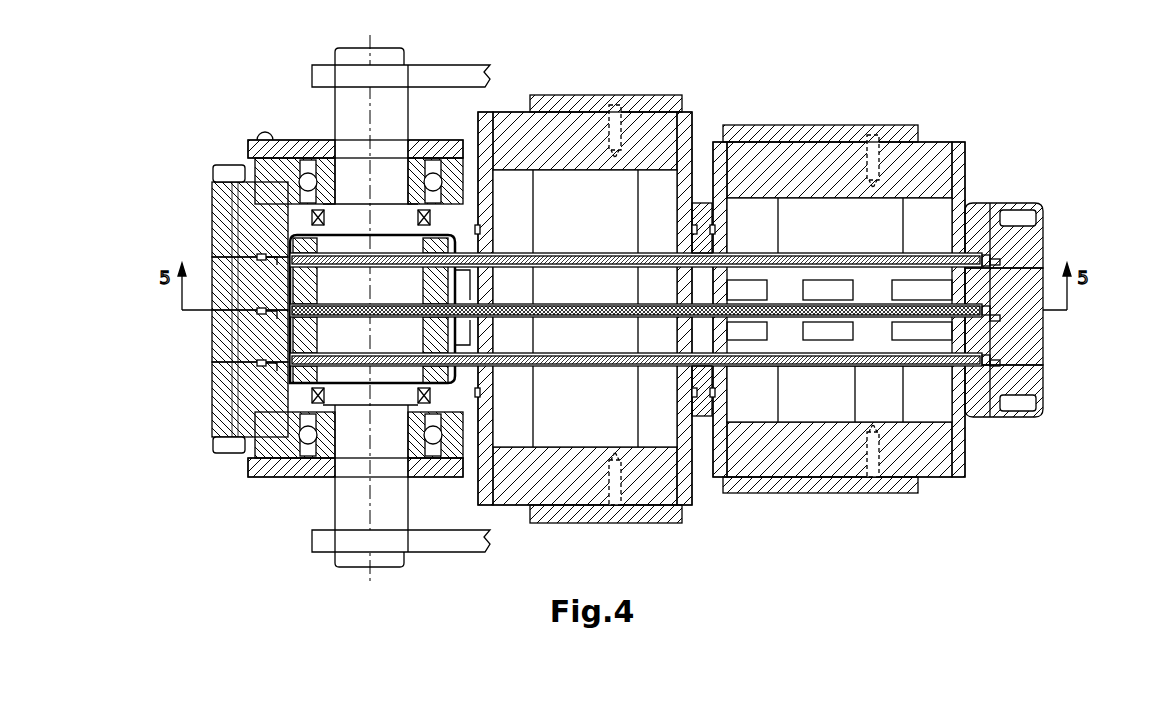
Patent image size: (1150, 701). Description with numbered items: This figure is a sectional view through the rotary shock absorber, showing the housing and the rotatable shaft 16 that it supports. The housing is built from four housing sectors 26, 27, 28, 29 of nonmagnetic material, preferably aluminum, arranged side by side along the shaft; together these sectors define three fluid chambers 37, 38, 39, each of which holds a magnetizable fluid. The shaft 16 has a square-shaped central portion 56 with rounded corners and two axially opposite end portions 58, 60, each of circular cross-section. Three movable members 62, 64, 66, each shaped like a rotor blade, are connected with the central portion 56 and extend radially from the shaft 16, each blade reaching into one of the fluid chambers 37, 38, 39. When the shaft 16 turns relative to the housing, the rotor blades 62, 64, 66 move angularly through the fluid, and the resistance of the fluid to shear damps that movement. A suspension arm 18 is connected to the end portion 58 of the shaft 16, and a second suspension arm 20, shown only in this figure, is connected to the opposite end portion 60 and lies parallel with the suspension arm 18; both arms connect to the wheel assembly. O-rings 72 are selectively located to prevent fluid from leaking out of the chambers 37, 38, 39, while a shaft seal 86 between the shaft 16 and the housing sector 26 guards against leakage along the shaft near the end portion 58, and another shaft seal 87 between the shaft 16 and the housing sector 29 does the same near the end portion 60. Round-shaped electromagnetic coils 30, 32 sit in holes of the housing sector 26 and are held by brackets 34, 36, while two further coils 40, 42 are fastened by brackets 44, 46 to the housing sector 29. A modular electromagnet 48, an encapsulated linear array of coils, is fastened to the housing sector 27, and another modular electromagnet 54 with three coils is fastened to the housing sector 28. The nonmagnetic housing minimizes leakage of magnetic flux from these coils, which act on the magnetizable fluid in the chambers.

The rotatable shaft 16 is at (360, 569).
The suspension arm 18 is at (462, 548).
The suspension arm 20 is at (437, 73).
The housing sector 26 is at (257, 398).
The housing sector 27 is at (253, 338).
The housing sector 28 is at (232, 288).
The housing sector 29 is at (253, 218).
The electromagnetic coil 30 is at (612, 418).
The electromagnetic coil 32 is at (880, 400).
The bracket 34 is at (560, 512).
The bracket 36 is at (797, 490).
The fluid chamber 37 is at (1027, 380).
The fluid chamber 38 is at (985, 315).
The fluid chamber 39 is at (873, 290).
The electromagnetic coil 40 is at (610, 203).
The electromagnetic coil 42 is at (900, 197).
The bracket 44 is at (650, 107).
The bracket 46 is at (907, 133).
The modular electromagnet 48 is at (872, 333).
The modular electromagnet 54 is at (867, 223).
The square-shaped central portion 56 is at (352, 330).
The end portion 58 is at (348, 497).
The end portion 60 is at (352, 118).
The movable member 62 is at (857, 362).
The movable member 64 is at (792, 313).
The movable member 66 is at (803, 253).
The O-ring 72 is at (255, 258).
The shaft seal 86 is at (328, 460).
The shaft seal 87 is at (308, 217).